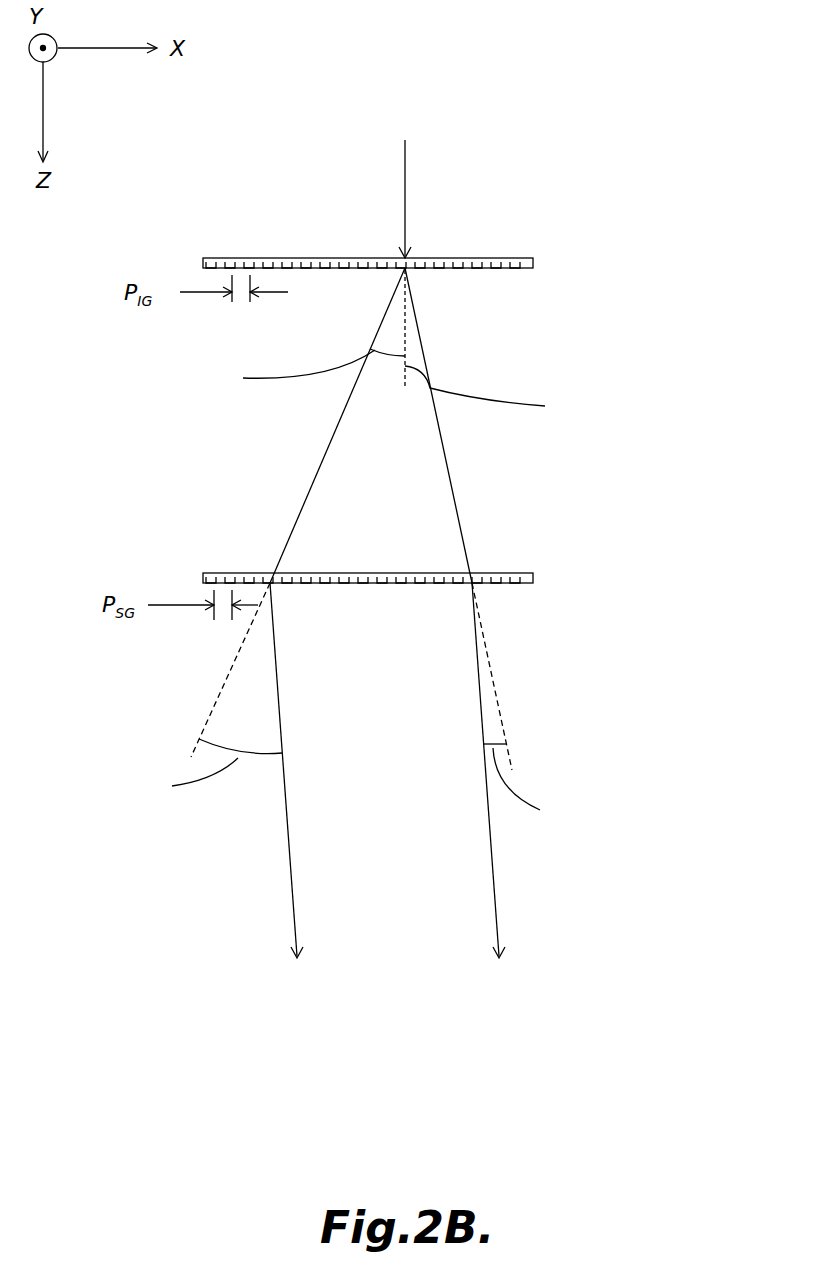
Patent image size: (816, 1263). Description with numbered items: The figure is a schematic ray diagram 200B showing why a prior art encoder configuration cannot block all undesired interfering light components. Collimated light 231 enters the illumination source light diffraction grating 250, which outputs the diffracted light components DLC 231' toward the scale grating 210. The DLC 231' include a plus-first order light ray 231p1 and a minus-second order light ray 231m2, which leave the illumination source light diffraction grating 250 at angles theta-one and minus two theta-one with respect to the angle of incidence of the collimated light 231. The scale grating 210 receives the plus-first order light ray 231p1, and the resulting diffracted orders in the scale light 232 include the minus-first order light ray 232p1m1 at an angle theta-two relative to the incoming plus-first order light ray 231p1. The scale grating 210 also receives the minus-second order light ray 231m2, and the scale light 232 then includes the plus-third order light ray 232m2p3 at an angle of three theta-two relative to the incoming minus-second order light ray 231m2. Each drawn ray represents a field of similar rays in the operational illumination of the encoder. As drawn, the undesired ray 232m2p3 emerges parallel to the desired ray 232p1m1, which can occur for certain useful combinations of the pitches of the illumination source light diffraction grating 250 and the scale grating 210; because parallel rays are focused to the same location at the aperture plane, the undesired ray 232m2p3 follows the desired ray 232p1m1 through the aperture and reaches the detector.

The schematic ray diagram 200B is at (613, 74).
The collimated light 231 is at (453, 199).
The illumination source light diffraction grating 250 is at (533, 261).
The DLC 231' is at (438, 425).
The −2 order light ray 231m2 is at (313, 477).
The +1 order light ray 231p1 is at (447, 464).
The scale grating 210 is at (533, 576).
The scale light 232 is at (443, 770).
The +3 order light ray 232m2p3 is at (293, 920).
The −1 order light ray 232p1m1 is at (497, 925).